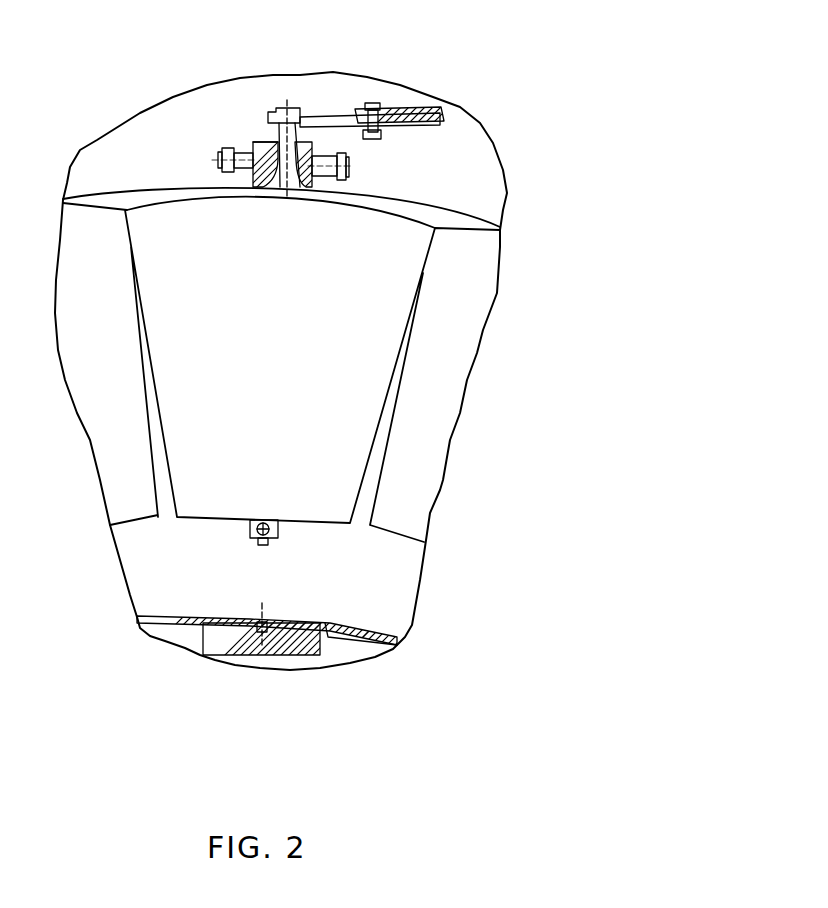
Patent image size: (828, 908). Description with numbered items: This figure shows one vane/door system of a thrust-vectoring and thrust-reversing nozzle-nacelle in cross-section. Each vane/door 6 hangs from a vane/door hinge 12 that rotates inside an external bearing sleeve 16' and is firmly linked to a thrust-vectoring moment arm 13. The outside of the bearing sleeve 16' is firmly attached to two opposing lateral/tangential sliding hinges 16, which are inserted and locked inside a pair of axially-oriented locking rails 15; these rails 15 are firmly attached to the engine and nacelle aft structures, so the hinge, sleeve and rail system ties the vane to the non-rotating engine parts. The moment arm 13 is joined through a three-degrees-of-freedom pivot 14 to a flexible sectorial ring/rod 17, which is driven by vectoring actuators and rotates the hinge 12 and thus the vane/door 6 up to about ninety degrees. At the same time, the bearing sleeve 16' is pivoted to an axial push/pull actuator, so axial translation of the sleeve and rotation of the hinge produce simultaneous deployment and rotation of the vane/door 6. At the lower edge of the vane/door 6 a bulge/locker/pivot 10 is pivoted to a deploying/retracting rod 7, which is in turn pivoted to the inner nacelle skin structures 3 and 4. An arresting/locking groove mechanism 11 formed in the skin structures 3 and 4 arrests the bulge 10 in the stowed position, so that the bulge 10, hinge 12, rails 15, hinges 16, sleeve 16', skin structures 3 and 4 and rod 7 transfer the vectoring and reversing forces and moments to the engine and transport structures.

The skin structure 3 is at (337, 627).
The skin structure 4 is at (357, 630).
The vane/door 6 is at (120, 421).
The rod 7 is at (250, 538).
The bulge/locker/pivot 10 is at (250, 528).
The arresting/locking groove mechanism 11 is at (205, 632).
The vane/door hinge 12 is at (288, 132).
The thrust-vectoring moment arm 13 is at (333, 125).
The three-degrees-of-freedom pivot 14 is at (378, 110).
The axially-oriented locking rails 15 is at (220, 167).
The lateral/tangential sliding hinges 16 is at (334, 114).
The bearing sleeve 16' is at (230, 81).
The TVFC/TR sectorial ring/rod 17 is at (415, 113).